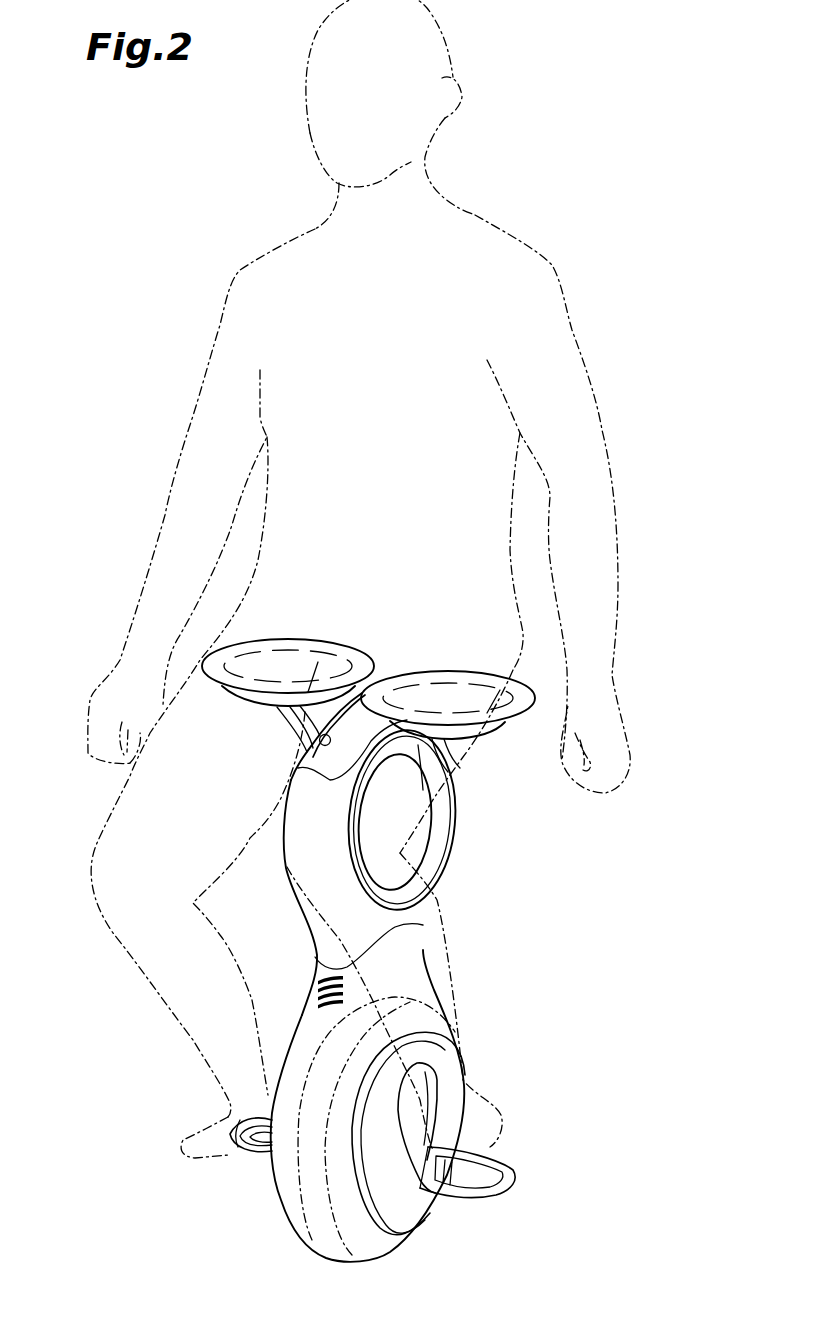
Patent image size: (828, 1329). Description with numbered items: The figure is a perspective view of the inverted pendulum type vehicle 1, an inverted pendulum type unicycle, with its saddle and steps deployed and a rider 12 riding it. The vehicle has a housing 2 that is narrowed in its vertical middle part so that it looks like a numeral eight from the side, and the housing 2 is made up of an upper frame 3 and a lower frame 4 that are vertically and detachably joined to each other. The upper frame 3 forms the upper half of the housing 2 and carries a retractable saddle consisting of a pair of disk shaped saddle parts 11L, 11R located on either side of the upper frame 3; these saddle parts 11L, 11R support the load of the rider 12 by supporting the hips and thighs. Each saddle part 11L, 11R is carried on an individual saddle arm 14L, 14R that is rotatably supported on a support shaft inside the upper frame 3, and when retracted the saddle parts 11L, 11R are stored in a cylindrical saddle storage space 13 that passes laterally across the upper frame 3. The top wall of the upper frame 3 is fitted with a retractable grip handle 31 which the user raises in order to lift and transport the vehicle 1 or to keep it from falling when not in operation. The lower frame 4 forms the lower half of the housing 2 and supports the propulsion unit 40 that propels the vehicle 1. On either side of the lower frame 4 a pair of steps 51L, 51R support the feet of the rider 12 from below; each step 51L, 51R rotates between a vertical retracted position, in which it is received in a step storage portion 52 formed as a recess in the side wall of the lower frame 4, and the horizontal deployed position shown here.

The inverted pendulum type vehicle 1 is at (252, 599).
The housing 2 is at (90, 928).
The upper frame 3 is at (278, 894).
The lower frame 4 is at (280, 1042).
The right saddle part 11R is at (285, 648).
The left saddle part 11L is at (455, 672).
The rider 12 is at (571, 330).
The saddle storage space 13 is at (392, 864).
The right saddle arm 14R is at (282, 727).
The left saddle arm 14L is at (440, 758).
The grip handle 31 is at (357, 706).
The propulsion unit 40 is at (364, 1262).
The right step 51R is at (237, 1130).
The left step 51L is at (512, 1166).
The step storage portion 52 is at (417, 1095).